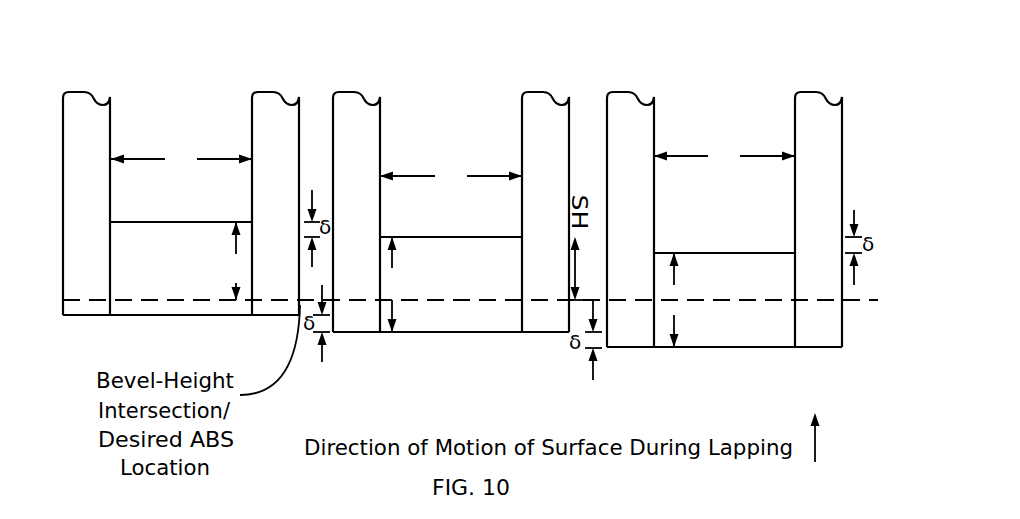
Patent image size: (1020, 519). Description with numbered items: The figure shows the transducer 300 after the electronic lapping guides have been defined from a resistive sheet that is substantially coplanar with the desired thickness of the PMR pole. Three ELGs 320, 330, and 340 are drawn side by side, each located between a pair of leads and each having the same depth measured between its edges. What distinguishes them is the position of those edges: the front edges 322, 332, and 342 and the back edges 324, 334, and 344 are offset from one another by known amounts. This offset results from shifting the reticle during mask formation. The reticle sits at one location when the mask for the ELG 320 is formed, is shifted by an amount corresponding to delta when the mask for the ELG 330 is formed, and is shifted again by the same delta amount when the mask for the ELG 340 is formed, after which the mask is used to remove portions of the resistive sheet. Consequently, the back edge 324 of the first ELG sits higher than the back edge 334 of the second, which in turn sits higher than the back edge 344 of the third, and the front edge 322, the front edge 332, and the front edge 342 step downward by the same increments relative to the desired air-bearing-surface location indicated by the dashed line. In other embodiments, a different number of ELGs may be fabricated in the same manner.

The transducer 300 is at (449, 45).
The ELG 320 is at (186, 100).
The front edge 322 is at (142, 315).
The back edge 324 is at (127, 222).
The ELG 330 is at (467, 123).
The front edge 332 is at (422, 332).
The back edge 334 is at (407, 237).
The ELG 340 is at (734, 108).
The front edge 342 is at (703, 347).
The back edge 344 is at (690, 253).